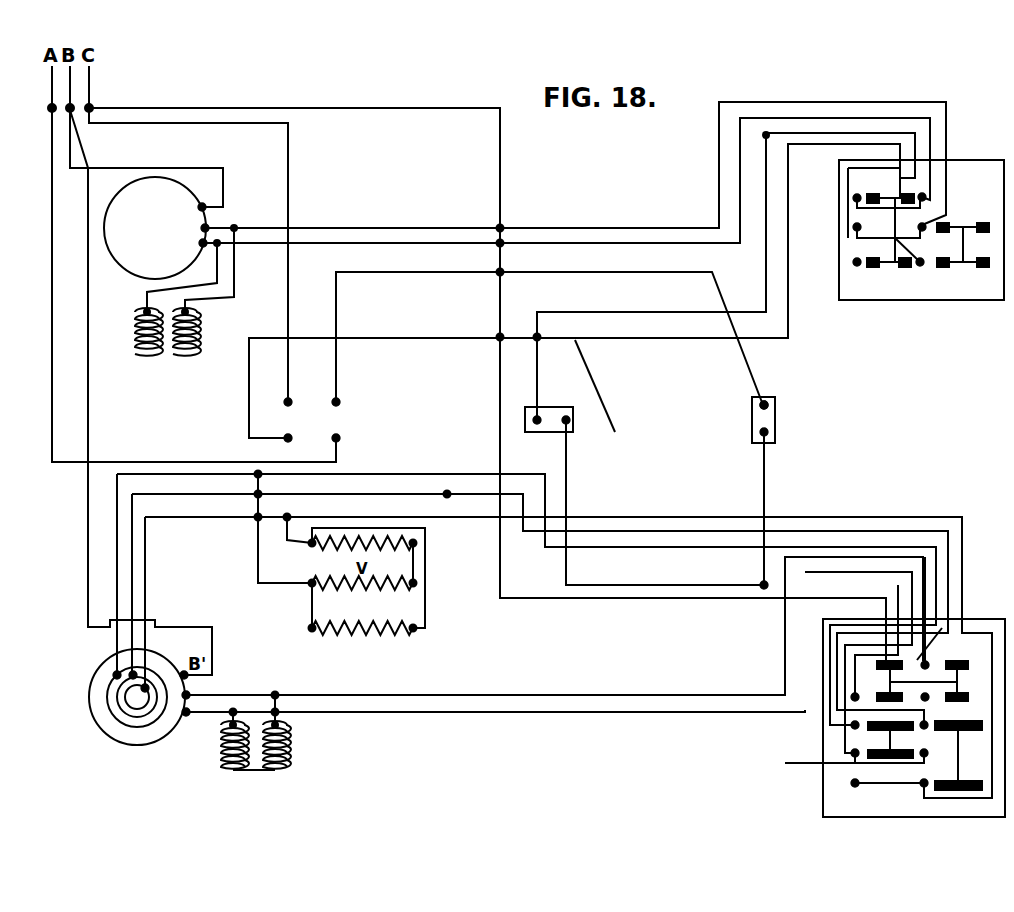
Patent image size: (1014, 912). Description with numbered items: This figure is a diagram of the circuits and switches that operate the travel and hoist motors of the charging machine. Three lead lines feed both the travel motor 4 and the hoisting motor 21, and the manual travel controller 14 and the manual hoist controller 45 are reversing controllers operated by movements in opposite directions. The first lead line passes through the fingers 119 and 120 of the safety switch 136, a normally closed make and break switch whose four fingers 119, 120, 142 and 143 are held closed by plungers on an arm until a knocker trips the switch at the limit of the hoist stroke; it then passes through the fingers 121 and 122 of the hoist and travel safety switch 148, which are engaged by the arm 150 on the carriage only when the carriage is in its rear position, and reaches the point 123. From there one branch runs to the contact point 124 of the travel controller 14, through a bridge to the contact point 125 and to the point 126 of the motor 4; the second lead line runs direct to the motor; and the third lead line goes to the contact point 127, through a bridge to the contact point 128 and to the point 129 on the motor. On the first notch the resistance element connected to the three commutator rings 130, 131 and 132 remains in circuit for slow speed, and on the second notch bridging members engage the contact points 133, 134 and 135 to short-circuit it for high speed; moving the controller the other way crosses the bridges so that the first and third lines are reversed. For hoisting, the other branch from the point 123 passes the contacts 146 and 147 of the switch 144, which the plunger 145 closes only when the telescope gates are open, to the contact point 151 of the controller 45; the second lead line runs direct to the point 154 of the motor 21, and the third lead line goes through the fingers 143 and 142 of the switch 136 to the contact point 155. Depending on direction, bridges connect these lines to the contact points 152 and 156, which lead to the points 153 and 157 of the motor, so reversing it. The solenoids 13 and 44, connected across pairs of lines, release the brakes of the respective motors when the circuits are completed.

The travel motor 4 is at (137, 697).
The solenoid 13 is at (256, 762).
The travel controller 14 is at (970, 621).
The hoisting motor 21 is at (155, 228).
The solenoid 44 is at (168, 342).
The hoist controller 45 is at (985, 146).
The finger 119 is at (356, 445).
The finger 120 is at (338, 404).
The finger 121 is at (768, 405).
The finger 122 is at (768, 433).
The point 123 is at (740, 574).
The contact point 124 is at (889, 715).
The contact point 125 is at (855, 786).
The point 126 is at (190, 694).
The contact point 127 is at (862, 734).
The contact point 128 is at (853, 757).
The point 129 is at (187, 717).
The commutator ring 130 is at (115, 673).
The commutator ring 131 is at (131, 676).
The commutator ring 132 is at (147, 686).
The contact point 133 is at (926, 674).
The contact point 134 is at (928, 699).
The contact point 135 is at (866, 686).
The safety switch 136 is at (330, 391).
The finger 142 is at (288, 440).
The finger 143 is at (288, 404).
The switch 144 is at (539, 424).
The plunger 145 is at (598, 392).
The contact 146 is at (568, 423).
The contact 147 is at (528, 420).
The hoist and travel safety switch 148 is at (766, 402).
The arm 150 is at (740, 425).
The contact point 151 is at (920, 266).
The contact point 152 is at (925, 226).
The point 153 is at (206, 245).
The point 154 is at (205, 205).
The contact point 155 is at (856, 265).
The contact point 156 is at (950, 186).
The point 157 is at (208, 226).